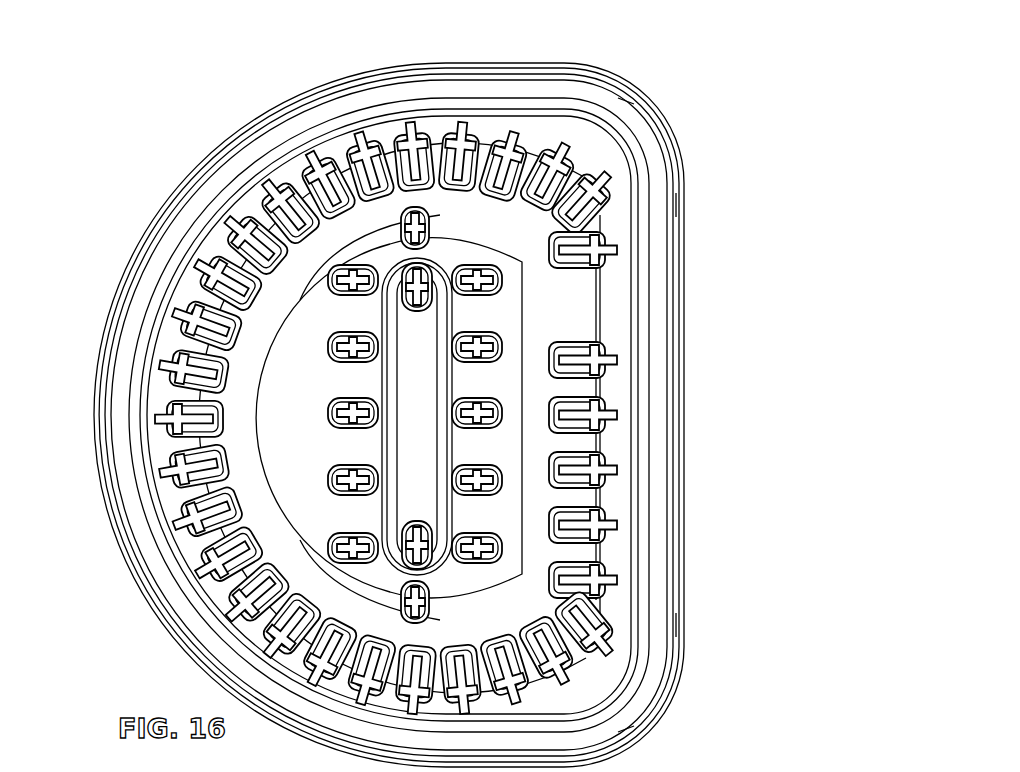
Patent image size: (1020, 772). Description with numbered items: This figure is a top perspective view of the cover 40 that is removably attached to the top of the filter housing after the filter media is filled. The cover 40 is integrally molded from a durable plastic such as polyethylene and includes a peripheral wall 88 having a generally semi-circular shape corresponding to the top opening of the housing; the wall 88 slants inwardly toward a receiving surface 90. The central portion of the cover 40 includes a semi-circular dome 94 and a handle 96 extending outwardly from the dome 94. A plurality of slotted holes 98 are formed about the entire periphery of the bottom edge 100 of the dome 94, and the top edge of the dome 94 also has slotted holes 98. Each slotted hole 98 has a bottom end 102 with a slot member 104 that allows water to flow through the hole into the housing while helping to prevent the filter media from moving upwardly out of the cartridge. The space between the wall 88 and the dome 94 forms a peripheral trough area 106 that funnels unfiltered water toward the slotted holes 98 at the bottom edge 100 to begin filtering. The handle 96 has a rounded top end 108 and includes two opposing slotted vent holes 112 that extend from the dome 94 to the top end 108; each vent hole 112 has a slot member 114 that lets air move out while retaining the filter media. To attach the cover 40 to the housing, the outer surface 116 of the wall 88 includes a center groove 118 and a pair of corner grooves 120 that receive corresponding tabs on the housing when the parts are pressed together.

The cover 40 is at (808, 90).
The peripheral wall 88 is at (589, 78).
The receiving surface 90 is at (190, 395).
The semi-circular dome 94 is at (478, 585).
The handle 96 is at (603, 357).
The slotted holes 98 is at (365, 140).
The bottom edge 100 is at (548, 638).
The bottom end 102 is at (413, 207).
The slot member 104 is at (512, 130).
The peripheral trough area 106 is at (160, 440).
The rounded top end 108 is at (417, 332).
The slotted vent holes 112 is at (567, 183).
The slot member 114 is at (440, 268).
The outer surface 116 is at (283, 100).
The center groove 118 is at (108, 410).
The corner grooves 120 is at (651, 100).